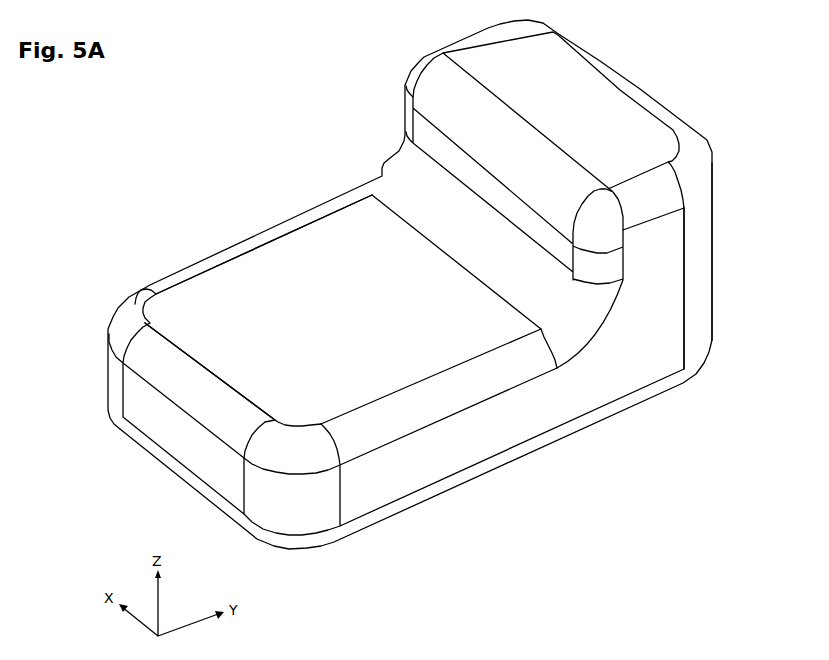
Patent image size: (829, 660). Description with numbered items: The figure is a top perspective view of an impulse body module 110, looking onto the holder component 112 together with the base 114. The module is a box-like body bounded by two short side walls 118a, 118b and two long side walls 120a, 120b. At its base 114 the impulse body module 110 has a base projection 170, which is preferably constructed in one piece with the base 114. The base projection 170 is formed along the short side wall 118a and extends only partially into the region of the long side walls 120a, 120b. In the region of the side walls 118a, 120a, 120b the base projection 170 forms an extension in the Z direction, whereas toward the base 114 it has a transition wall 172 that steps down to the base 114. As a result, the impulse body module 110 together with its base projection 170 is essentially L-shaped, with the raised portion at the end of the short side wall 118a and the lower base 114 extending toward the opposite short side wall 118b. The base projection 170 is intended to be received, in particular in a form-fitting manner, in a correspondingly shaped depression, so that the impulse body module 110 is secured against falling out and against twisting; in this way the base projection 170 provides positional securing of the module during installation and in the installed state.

The impulse body module 110 is at (256, 114).
The holder component 112 is at (270, 248).
The base 114 is at (270, 310).
The short side wall 118a is at (716, 212).
The short side wall 118b is at (194, 452).
The long side wall 120a is at (550, 413).
The long side wall 120b is at (297, 221).
The base projection 170 is at (668, 86).
The transition wall 172 is at (440, 152).